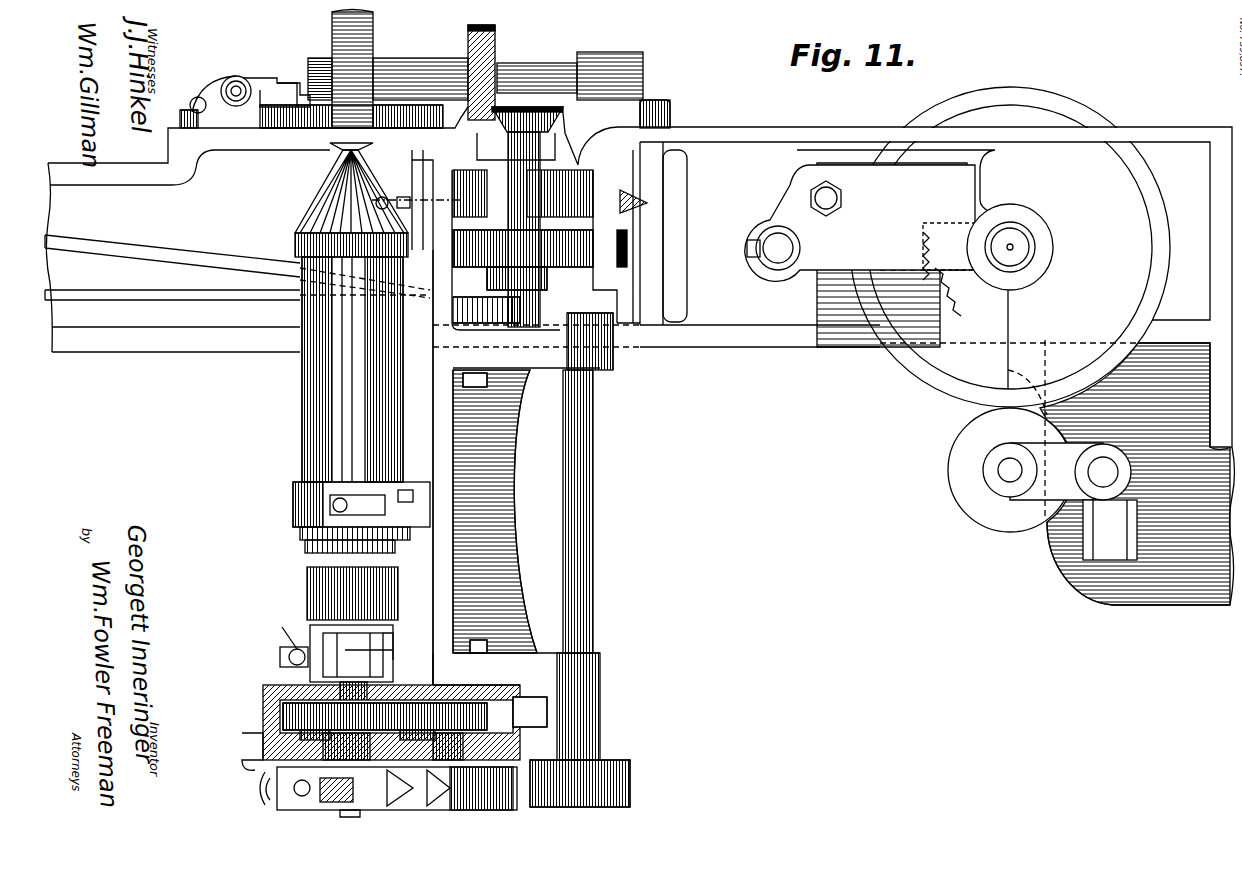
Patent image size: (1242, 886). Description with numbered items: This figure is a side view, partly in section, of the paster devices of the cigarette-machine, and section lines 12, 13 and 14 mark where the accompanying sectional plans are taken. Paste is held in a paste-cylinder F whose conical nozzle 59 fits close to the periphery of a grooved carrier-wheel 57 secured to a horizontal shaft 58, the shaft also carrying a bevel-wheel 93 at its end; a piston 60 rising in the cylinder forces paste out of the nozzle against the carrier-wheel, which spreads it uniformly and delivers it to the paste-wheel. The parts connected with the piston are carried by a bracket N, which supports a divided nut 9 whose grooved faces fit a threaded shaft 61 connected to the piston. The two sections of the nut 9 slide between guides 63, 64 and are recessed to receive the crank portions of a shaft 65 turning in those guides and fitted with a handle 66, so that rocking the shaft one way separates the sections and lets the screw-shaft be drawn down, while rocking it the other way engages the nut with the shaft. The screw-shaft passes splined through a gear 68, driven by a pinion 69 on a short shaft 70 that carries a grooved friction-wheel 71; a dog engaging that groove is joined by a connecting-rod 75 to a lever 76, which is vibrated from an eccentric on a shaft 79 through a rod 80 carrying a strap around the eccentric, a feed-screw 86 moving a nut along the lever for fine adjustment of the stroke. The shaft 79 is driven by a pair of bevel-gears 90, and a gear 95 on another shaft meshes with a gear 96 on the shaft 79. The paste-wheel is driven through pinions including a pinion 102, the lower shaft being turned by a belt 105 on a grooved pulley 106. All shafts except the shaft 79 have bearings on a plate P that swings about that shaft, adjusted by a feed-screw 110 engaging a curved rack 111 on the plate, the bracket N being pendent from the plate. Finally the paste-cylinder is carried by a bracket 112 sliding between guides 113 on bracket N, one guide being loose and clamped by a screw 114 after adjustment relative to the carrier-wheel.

The carrier-wheel 57 is at (335, 40).
The horizontal shaft 58 is at (535, 67).
The conical nozzle 59 is at (332, 191).
The piston 60 is at (307, 596).
The threaded shaft 61 is at (345, 695).
The guide 63 is at (312, 636).
The guide 64 is at (397, 640).
The crank shaft 65 is at (286, 655).
The handle 66 is at (276, 626).
The gear 68 is at (283, 712).
The pinion 69 is at (531, 712).
The short shaft 70 is at (456, 690).
The grooved friction-wheel 71 is at (430, 788).
The connecting-rod 75 is at (286, 806).
The lever 76 is at (272, 789).
The shaft 79 is at (593, 479).
The rod 80 is at (519, 782).
The feed-screw 86 is at (280, 793).
The bevel-gears 90 is at (650, 194).
The bevel gear 93 is at (482, 28).
The gear 95 is at (549, 264).
The gear 96 is at (628, 254).
The pinion 102 is at (470, 262).
The belt 105 is at (156, 296).
The grooved pulley 106 is at (506, 302).
The feed-screw 110 is at (214, 87).
The curved rack 111 is at (268, 78).
The bracket 112 is at (346, 173).
The guides 113 is at (420, 186).
The screw 114 is at (376, 207).
The paste-cylinder F is at (302, 407).
The bracket N is at (442, 578).
The plate P is at (672, 114).
The divided nut 9 is at (393, 652).
The section line 12 is at (290, 652).
The section line 13 is at (250, 765).
The section line 14 is at (622, 200).